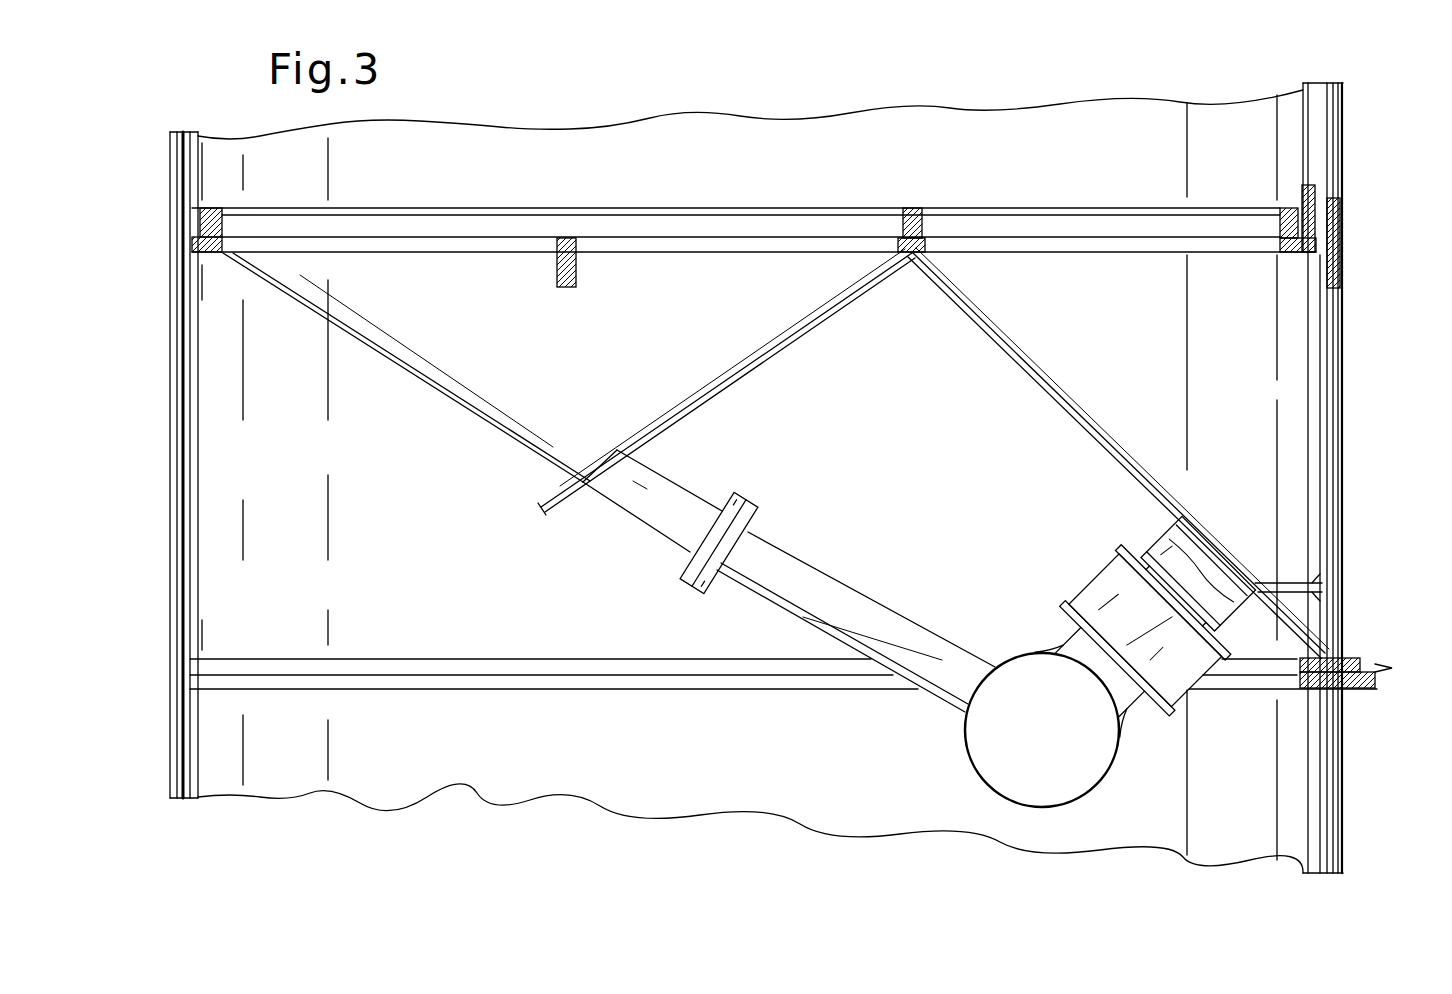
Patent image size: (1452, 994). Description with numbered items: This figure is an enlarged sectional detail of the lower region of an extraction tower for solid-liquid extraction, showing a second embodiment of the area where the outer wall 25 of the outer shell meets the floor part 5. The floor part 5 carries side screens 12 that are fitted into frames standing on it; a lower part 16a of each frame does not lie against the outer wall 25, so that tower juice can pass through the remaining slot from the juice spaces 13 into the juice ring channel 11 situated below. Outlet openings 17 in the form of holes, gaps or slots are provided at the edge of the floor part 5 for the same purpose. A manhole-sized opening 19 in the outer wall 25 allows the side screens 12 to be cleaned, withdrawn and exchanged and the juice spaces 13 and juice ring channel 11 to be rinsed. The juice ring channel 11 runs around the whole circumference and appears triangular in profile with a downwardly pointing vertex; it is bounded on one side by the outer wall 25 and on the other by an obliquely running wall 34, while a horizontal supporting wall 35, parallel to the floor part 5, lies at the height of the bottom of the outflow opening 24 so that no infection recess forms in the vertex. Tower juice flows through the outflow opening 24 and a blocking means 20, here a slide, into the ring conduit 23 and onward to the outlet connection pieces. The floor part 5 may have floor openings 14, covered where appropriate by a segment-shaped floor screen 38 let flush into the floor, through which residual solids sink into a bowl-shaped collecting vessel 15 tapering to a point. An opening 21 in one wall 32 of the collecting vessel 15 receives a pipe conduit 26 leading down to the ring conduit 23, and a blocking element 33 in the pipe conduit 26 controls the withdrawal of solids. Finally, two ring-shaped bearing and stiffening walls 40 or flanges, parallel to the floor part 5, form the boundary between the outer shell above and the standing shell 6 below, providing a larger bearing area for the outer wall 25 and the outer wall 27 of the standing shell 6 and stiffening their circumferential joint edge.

The floor part 5 is at (1113, 237).
The standing shell 6 is at (164, 400).
The juice ring channel 11 is at (1290, 505).
The side screens 12 is at (1305, 120).
The juice spaces 13 is at (1313, 163).
The floor openings 14 is at (677, 247).
The collecting vessel 15 is at (490, 298).
The lower part of the frame 16a is at (1302, 196).
The outlet openings 17 is at (1322, 216).
The opening 19 is at (1337, 187).
The blocking means 20 is at (1180, 690).
The opening 21 is at (622, 487).
The ring conduit 23 is at (1045, 787).
The outflow opening 24 is at (1228, 578).
The outer wall 25 is at (1336, 460).
The pipe conduit 26 is at (803, 595).
The outer wall of the standing shell 27 is at (1333, 778).
The wall 32 is at (540, 512).
The blocking element 33 is at (700, 592).
The wall 34 is at (1118, 445).
The supporting wall 35 is at (1302, 593).
The floor screen 38 is at (607, 212).
The bearing and stiffening walls 40 is at (1370, 673).